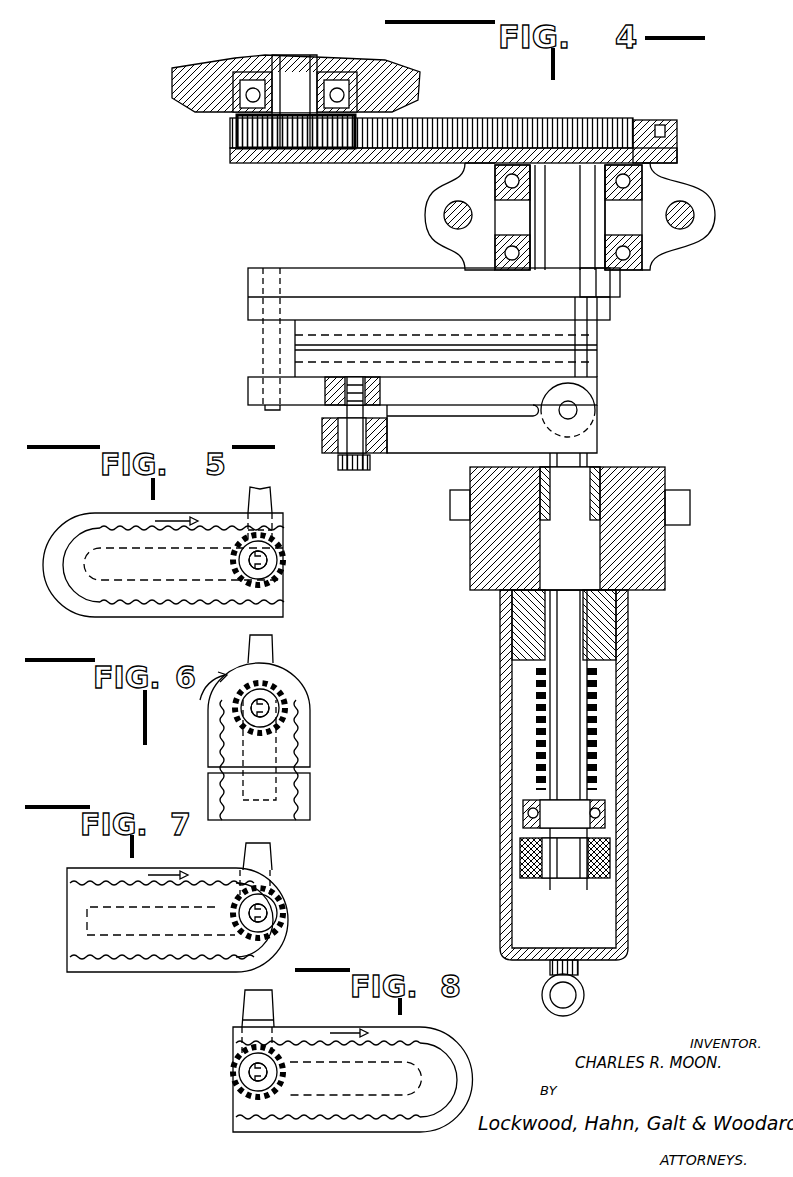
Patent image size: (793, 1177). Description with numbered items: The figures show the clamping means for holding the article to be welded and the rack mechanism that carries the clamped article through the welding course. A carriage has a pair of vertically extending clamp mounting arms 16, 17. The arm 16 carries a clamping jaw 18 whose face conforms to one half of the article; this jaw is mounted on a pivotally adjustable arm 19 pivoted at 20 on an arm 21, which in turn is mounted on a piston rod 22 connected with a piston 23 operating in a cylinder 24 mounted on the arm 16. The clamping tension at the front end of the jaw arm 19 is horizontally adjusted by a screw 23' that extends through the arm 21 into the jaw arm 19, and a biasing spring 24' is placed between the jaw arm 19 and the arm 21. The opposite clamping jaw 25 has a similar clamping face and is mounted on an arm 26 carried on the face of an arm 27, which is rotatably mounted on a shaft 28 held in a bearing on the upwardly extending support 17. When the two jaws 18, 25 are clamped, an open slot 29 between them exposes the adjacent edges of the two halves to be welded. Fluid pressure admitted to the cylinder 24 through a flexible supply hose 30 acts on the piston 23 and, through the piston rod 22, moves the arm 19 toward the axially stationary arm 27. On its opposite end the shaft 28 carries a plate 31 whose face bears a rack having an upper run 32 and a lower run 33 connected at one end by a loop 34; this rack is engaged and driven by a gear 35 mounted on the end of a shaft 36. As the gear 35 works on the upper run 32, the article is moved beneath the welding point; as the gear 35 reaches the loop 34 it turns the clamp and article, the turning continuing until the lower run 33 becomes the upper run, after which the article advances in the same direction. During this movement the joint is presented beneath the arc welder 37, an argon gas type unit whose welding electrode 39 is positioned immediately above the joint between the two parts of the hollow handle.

In FIG. 4, the clamp mounting arm 16 is at (655, 572).
In FIG. 4, the clamp mounting arm 17 is at (660, 266).
In FIG. 4, the clamping jaw 18 is at (597, 362).
In FIG. 4, the pivotally adjustable arm 19 is at (422, 391).
In FIG. 4, the pivot 20 is at (577, 410).
In FIG. 4, the arm 21 is at (442, 446).
In FIG. 4, the piston rod 22 is at (570, 492).
In FIG. 4, the piston 23 is at (601, 857).
In FIG. 4, the screw 23' is at (353, 442).
In FIG. 4, the cylinder 24 is at (589, 775).
In FIG. 4, the biasing spring 24' is at (335, 415).
In FIG. 4, the clamping jaw 25 is at (595, 338).
In FIG. 4, the arm 26 is at (312, 305).
In FIG. 4, the arm 27 is at (333, 278).
In FIG. 4, the shaft 28 is at (585, 218).
In FIG. 4, the open slot 29 is at (405, 348).
In FIG. 4, the flexible supply hose 30 is at (590, 1000).
In FIG. 4, the plate 31 is at (503, 160).
In FIG. 5, the plate 31 is at (278, 598).
In FIG. 6, the plate 31 is at (283, 820).
In FIG. 7, the plate 31 is at (80, 897).
In FIG. 8, the plate 31 is at (240, 1105).
In FIG. 5, the upper run 32 is at (205, 527).
In FIG. 6, the upper run 32 is at (300, 745).
In FIG. 7, the upper run 32 is at (160, 958).
In FIG. 8, the upper run 32 is at (348, 1117).
In FIG. 4, the lower run 33 is at (442, 125).
In FIG. 5, the lower run 33 is at (175, 602).
In FIG. 6, the lower run 33 is at (220, 745).
In FIG. 7, the lower run 33 is at (200, 882).
In FIG. 8, the lower run 33 is at (375, 1040).
In FIG. 4, the loop 34 is at (633, 130).
In FIG. 5, the loop 34 is at (58, 570).
In FIG. 6, the loop 34 is at (285, 690).
In FIG. 7, the loop 34 is at (290, 925).
In FIG. 8, the loop 34 is at (460, 1075).
In FIG. 4, the gear 35 is at (270, 133).
In FIG. 5, the gear 35 is at (285, 560).
In FIG. 6, the gear 35 is at (278, 710).
In FIG. 7, the gear 35 is at (280, 898).
In FIG. 8, the gear 35 is at (240, 1078).
In FIG. 4, the shaft 36 is at (302, 62).
In FIG. 5, the shaft 36 is at (268, 563).
In FIG. 6, the shaft 36 is at (268, 712).
In FIG. 7, the shaft 36 is at (268, 912).
In FIG. 8, the shaft 36 is at (245, 1072).
In FIG. 5, the arc welder 37 is at (268, 505).
In FIG. 6, the arc welder 37 is at (272, 650).
In FIG. 7, the arc welder 37 is at (270, 860).
In FIG. 8, the arc welder 37 is at (265, 1015).
In FIG. 5, the welding electrode 39 is at (288, 547).
In FIG. 6, the welding electrode 39 is at (215, 700).
In FIG. 7, the welding electrode 39 is at (225, 912).
In FIG. 8, the welding electrode 39 is at (235, 1055).